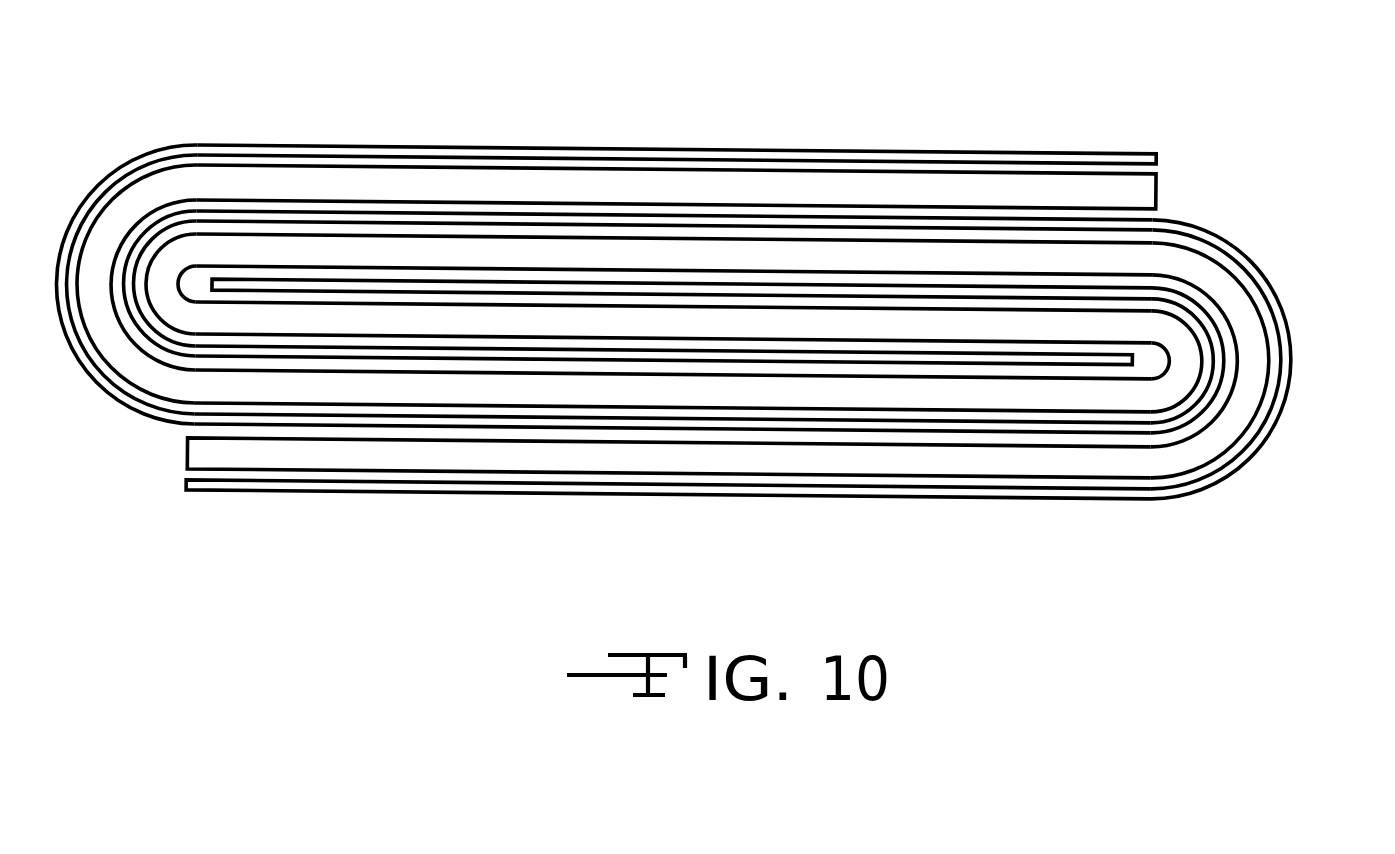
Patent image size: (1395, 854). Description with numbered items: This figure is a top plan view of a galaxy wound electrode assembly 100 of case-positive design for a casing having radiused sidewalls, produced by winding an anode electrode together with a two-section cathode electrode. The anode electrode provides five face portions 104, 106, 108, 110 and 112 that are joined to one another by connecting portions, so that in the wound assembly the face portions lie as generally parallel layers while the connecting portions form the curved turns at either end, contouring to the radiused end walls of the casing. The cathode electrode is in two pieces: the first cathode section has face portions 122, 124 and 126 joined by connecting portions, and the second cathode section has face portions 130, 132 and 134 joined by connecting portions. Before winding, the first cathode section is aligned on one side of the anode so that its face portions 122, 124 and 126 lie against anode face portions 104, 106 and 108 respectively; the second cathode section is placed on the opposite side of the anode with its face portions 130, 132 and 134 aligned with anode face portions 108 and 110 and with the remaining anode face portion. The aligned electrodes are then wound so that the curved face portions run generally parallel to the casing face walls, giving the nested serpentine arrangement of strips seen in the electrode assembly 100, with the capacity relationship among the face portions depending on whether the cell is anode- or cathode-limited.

The electrode assembly 100 is at (1338, 160).
The anode face portion 104 is at (1063, 465).
The anode face portion 106 is at (933, 400).
The anode face portion 108 is at (693, 323).
The anode face portion 110 is at (923, 257).
The anode face portion 112 is at (868, 193).
The cathode face portion 122 is at (430, 153).
The cathode face portion 124 is at (640, 218).
The cathode face portion 126 is at (468, 292).
The cathode face portion 130 is at (425, 355).
The cathode face portion 132 is at (325, 423).
The cathode face portion 134 is at (503, 487).